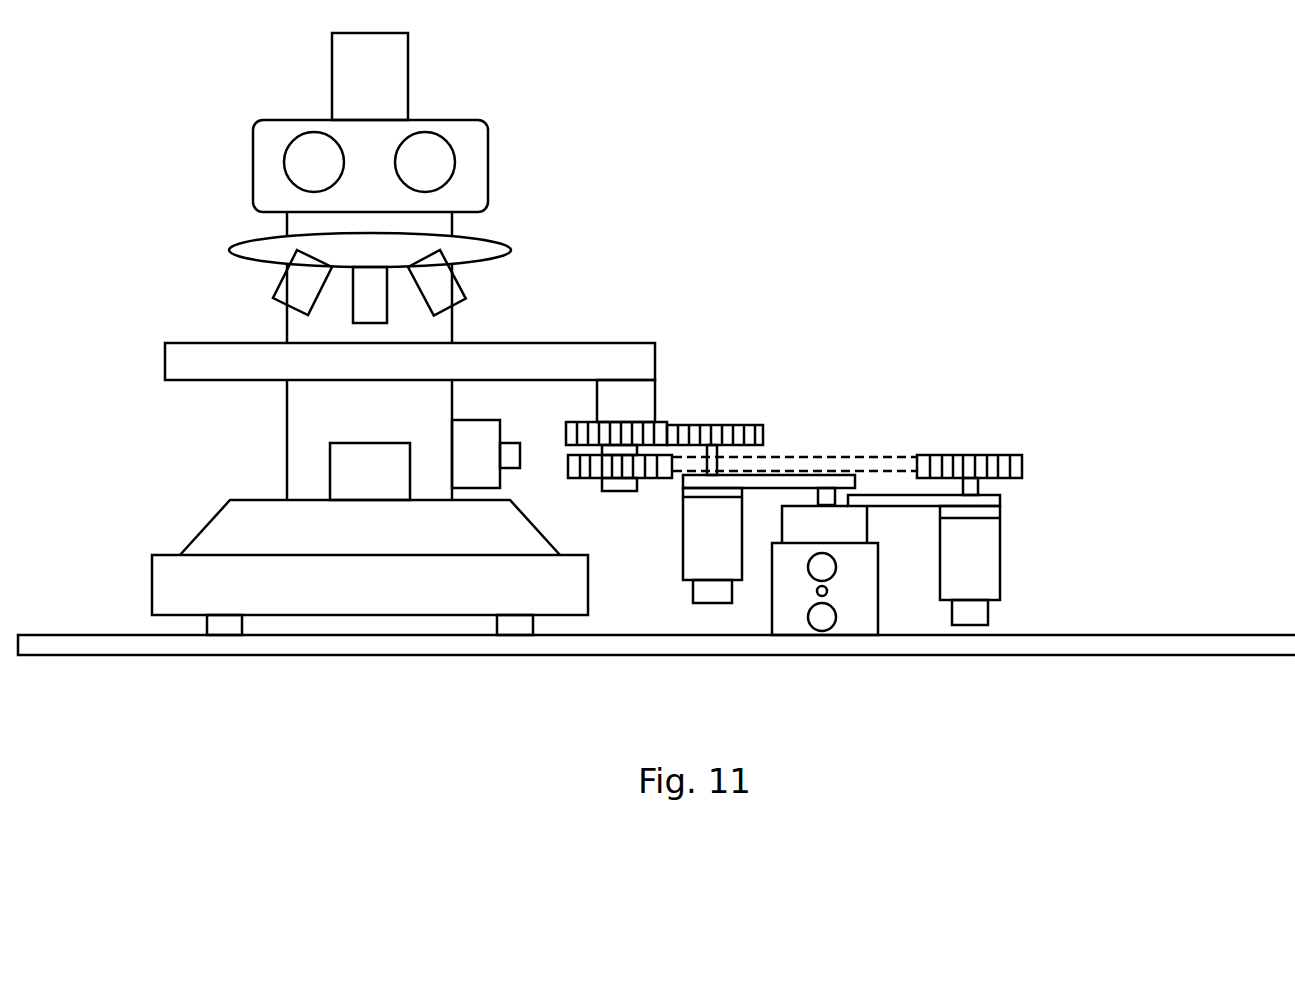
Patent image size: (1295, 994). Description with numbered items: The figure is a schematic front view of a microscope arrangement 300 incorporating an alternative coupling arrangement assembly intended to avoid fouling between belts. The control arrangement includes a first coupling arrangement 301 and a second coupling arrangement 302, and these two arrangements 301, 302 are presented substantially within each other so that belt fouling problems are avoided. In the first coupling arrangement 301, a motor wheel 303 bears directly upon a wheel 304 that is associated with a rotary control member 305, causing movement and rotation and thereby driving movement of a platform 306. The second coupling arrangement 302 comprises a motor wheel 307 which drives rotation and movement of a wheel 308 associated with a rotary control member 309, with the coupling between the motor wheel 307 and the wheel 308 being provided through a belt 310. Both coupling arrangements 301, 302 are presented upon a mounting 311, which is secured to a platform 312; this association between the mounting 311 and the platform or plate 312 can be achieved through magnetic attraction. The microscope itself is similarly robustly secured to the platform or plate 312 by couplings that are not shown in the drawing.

The microscope arrangement 300 is at (603, 226).
The first coupling arrangement 301 is at (678, 453).
The second coupling arrangement 302 is at (890, 536).
The motor wheel 303 is at (765, 430).
The wheel 304 is at (570, 420).
The rotary control member 305 is at (643, 398).
The platform 306 is at (628, 343).
The motor wheel 307 is at (1023, 460).
The wheel 308 is at (657, 478).
The rotary control member 309 is at (608, 491).
The belt 310 is at (863, 463).
The mounting 311 is at (860, 623).
The platform 312 is at (1035, 648).